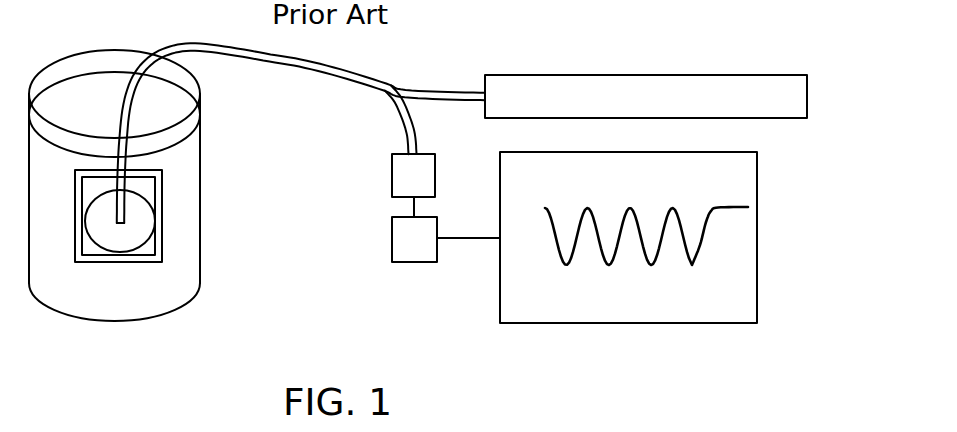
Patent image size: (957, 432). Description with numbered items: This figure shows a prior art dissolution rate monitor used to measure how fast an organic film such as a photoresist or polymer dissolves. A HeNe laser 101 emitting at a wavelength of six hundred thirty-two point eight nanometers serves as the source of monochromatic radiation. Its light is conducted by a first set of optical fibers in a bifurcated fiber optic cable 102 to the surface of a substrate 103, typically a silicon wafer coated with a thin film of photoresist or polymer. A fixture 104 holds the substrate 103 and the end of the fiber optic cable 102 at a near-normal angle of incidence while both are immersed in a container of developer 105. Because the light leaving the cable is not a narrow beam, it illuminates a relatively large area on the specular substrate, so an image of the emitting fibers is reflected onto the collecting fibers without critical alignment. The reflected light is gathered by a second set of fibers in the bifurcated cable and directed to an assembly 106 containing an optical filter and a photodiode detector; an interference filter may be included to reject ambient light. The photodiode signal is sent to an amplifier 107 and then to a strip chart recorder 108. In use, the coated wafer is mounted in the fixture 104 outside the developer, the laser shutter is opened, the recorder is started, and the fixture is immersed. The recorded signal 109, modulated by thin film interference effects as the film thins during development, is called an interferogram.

The HeNe laser 101 is at (603, 75).
The bifurcated fiber optic cable 102 is at (383, 80).
The substrate 103 is at (137, 193).
The fixture 104 is at (162, 200).
The container of developer 105 is at (200, 243).
The assembly containing an optical filter and photodiode detector 106 is at (392, 168).
The amplifier 107 is at (392, 242).
The strip chart recorder 108 is at (500, 293).
The recorded signal 109 is at (602, 260).